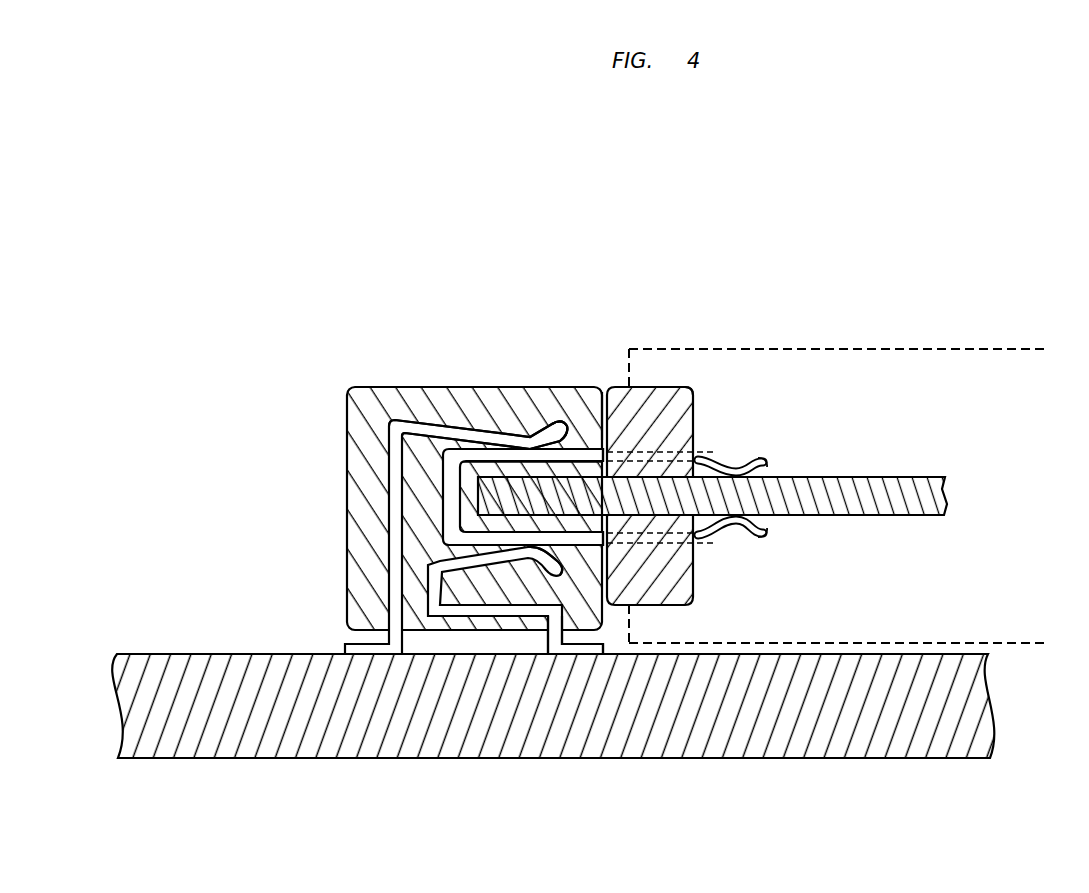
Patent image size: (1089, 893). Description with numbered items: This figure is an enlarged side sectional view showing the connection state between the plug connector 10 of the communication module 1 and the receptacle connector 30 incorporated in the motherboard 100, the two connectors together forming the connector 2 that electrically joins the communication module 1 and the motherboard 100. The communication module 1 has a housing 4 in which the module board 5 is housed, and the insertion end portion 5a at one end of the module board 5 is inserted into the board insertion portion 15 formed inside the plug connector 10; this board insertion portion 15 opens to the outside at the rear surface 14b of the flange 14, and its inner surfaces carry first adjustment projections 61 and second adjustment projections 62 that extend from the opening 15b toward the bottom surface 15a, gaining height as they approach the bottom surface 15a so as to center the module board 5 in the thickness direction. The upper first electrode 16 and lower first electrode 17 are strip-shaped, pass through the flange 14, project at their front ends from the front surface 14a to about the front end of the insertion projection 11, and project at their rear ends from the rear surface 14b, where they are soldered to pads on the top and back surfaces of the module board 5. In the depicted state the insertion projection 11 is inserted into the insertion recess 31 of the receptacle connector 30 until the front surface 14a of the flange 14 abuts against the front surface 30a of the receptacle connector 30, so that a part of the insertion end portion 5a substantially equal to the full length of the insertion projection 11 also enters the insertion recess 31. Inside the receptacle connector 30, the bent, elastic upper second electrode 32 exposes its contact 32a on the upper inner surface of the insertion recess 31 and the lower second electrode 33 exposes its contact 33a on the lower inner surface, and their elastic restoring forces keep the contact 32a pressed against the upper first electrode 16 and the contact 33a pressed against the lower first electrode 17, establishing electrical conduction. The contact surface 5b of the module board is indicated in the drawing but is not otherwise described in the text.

The communication module 1 is at (575, 487).
The connector 2 is at (535, 425).
The housing 4 is at (1030, 349).
The module board 5 is at (737, 473).
The insertion end portion 5a is at (677, 512).
The upper contact portion of FPC 5b is at (482, 477).
The plug connector 10 is at (692, 413).
The insertion projection 11 is at (472, 476).
The flange 14 is at (687, 537).
The front surface of the flange 14a is at (577, 548).
The rear surface of the flange 14b is at (700, 396).
The board insertion portion 15 is at (573, 470).
The bottom surface of the board insertion portion 15a is at (522, 440).
The opening of the board insertion portion 15b is at (714, 470).
The upper first electrode 16 is at (765, 460).
The lower first electrode 17 is at (768, 535).
The receptacle connector 30 is at (408, 427).
The front surface of the receptacle connector 30a is at (604, 396).
The insertion recess 31 is at (455, 527).
The upper second electrode 32 is at (523, 349).
The contact of the upper second electrode 32a is at (566, 432).
The lower second electrode 33 is at (545, 716).
The contact of the lower second electrode 33a is at (586, 585).
The first adjustment projection 61 is at (640, 455).
The second adjustment projection 62 is at (680, 504).
The motherboard 100 is at (178, 653).